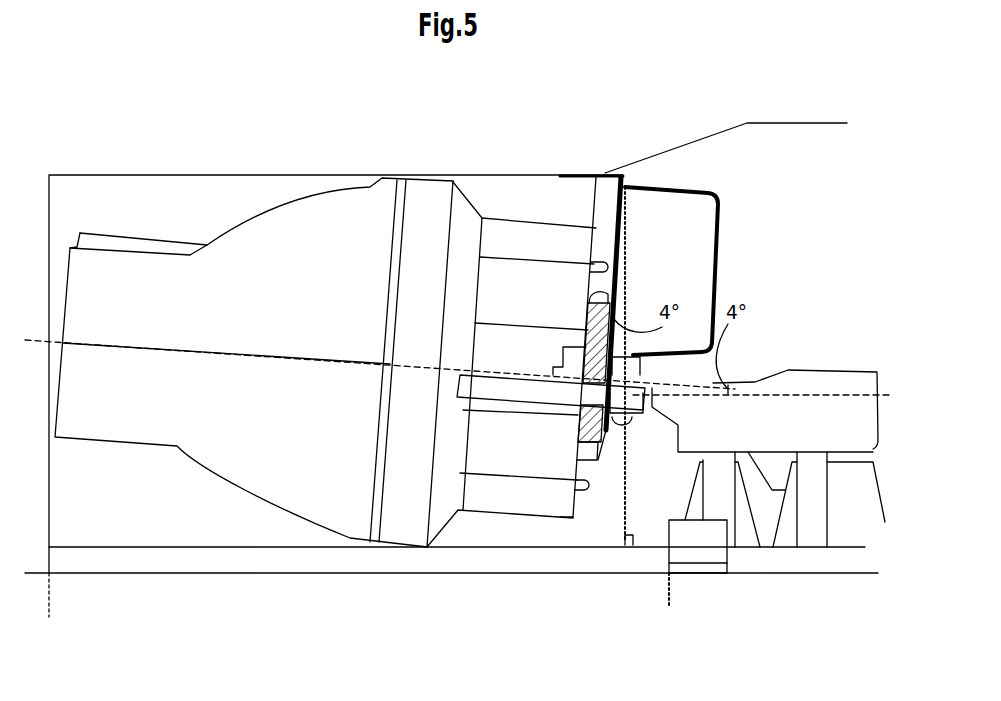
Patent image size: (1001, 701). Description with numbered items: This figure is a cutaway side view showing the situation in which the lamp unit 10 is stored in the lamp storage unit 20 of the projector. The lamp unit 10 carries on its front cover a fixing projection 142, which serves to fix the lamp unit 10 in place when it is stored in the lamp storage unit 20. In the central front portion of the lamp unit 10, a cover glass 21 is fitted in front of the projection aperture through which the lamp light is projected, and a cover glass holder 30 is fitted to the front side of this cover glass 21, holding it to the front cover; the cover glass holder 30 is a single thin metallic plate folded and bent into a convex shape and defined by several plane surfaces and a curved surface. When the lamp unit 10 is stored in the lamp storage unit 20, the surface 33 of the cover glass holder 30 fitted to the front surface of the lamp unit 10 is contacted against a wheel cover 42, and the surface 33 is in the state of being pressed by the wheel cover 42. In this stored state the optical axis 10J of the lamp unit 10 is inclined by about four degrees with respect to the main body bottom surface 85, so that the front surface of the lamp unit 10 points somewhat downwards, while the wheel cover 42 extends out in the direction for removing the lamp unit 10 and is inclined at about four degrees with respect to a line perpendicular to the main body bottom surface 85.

The lamp unit 10 is at (213, 445).
The optical axis 10J is at (780, 390).
The lamp storage unit 20 is at (231, 196).
The cover glass 21 is at (588, 317).
The cover glass holder 30 is at (601, 472).
The surface 33 is at (602, 442).
The wheel cover 42 is at (613, 248).
The main body bottom surface 85 is at (217, 562).
The fixing projection 142 is at (500, 390).